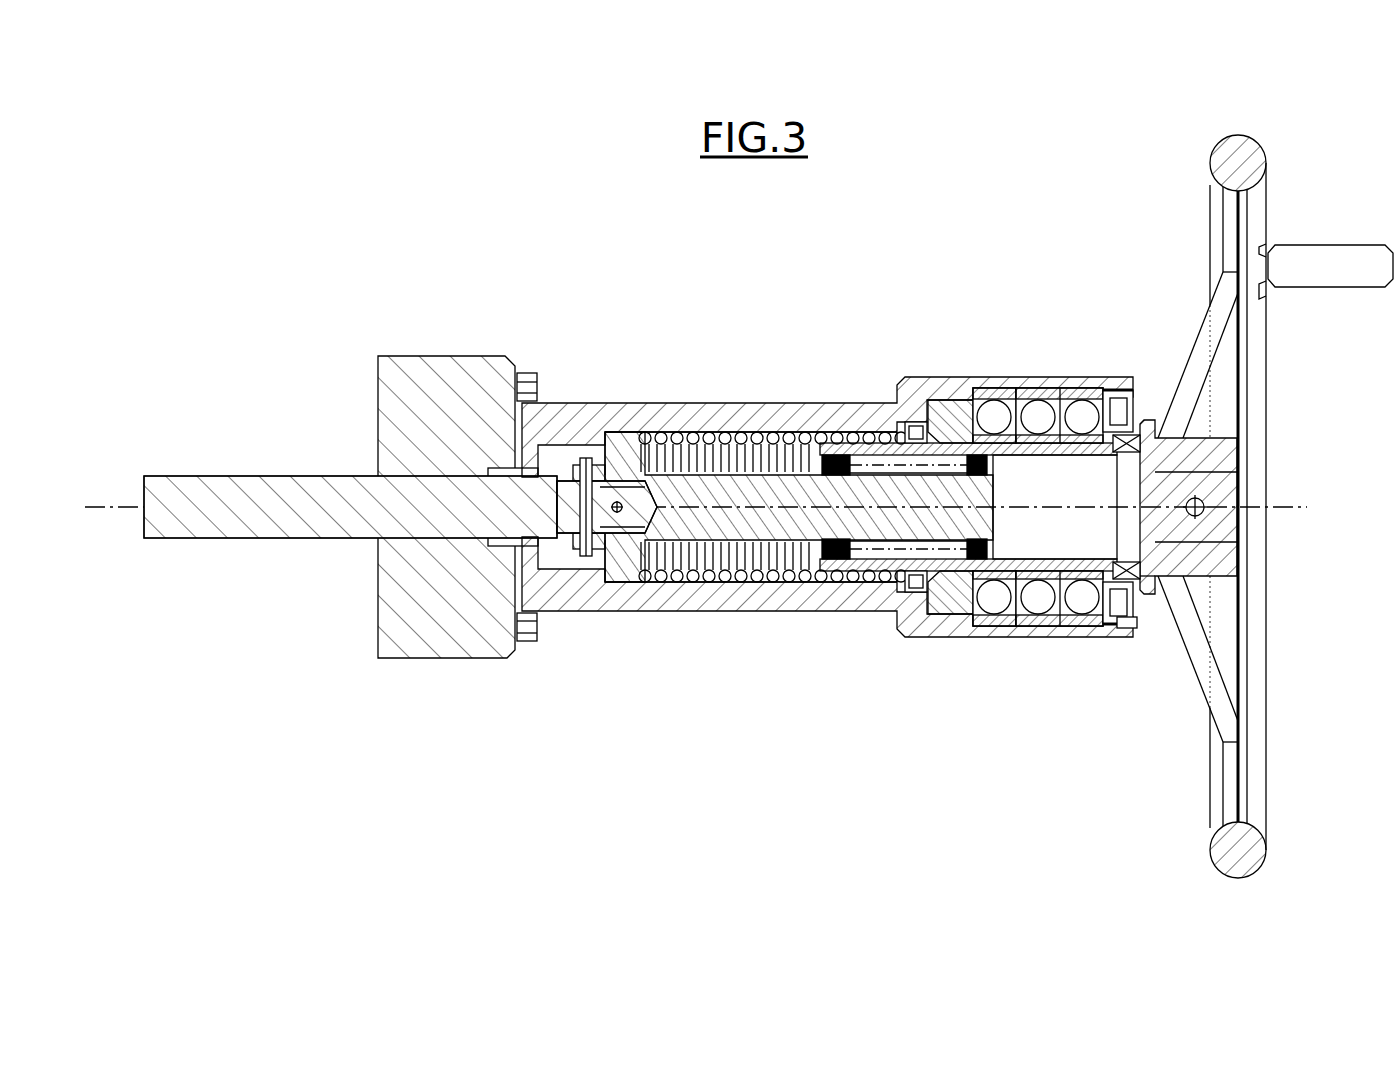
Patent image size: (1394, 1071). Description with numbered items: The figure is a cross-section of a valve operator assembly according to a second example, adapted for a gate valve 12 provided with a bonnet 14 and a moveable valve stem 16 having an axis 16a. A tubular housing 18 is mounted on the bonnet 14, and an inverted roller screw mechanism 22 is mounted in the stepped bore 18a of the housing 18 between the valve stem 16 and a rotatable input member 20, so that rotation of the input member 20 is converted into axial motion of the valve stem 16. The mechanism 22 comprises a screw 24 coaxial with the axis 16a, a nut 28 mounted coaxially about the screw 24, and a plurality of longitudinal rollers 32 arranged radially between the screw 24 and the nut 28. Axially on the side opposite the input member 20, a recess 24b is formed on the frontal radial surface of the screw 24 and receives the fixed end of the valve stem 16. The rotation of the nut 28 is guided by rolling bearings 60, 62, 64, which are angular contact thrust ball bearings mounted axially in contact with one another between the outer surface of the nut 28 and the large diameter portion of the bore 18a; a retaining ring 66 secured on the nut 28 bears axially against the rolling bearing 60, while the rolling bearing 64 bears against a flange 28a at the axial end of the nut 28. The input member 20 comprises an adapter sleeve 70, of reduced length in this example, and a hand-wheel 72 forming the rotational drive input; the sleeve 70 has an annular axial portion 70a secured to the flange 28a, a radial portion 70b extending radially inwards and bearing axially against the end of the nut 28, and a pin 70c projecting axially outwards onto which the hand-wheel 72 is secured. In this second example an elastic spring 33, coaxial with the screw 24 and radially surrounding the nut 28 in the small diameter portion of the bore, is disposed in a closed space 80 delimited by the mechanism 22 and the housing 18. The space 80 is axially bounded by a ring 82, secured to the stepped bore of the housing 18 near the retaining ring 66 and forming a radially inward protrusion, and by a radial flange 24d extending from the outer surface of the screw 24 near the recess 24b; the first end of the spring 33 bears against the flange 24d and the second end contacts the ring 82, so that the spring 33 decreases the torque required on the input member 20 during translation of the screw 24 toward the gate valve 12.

The gate valve 12 is at (477, 328).
The bonnet 14 is at (420, 357).
The valve stem 16 is at (258, 476).
The axis 16a is at (128, 505).
The tubular housing 18 is at (928, 375).
The bore 18a is at (605, 425).
The input member 20 is at (1275, 506).
The inverted roller screw mechanism 22 is at (890, 585).
The screw 24 is at (783, 515).
The recess 24b is at (577, 512).
The radial flange 24d is at (636, 436).
The nut 28 is at (823, 580).
The flange 28a is at (1126, 432).
The longitudinal rollers 32 is at (872, 558).
The elastic spring 33 is at (797, 432).
The rolling bearing 60 is at (1008, 390).
The rolling bearing 62 is at (1057, 390).
The rolling bearing 64 is at (1110, 400).
The retaining ring 66 is at (957, 420).
The adapter sleeve 70 is at (1245, 504).
The annular axial portion 70a is at (1127, 632).
The radial portion 70b is at (1148, 562).
The pin 70c is at (1200, 481).
The hand-wheel 72 is at (1268, 784).
The closed space 80 is at (750, 432).
The ring 82 is at (903, 420).